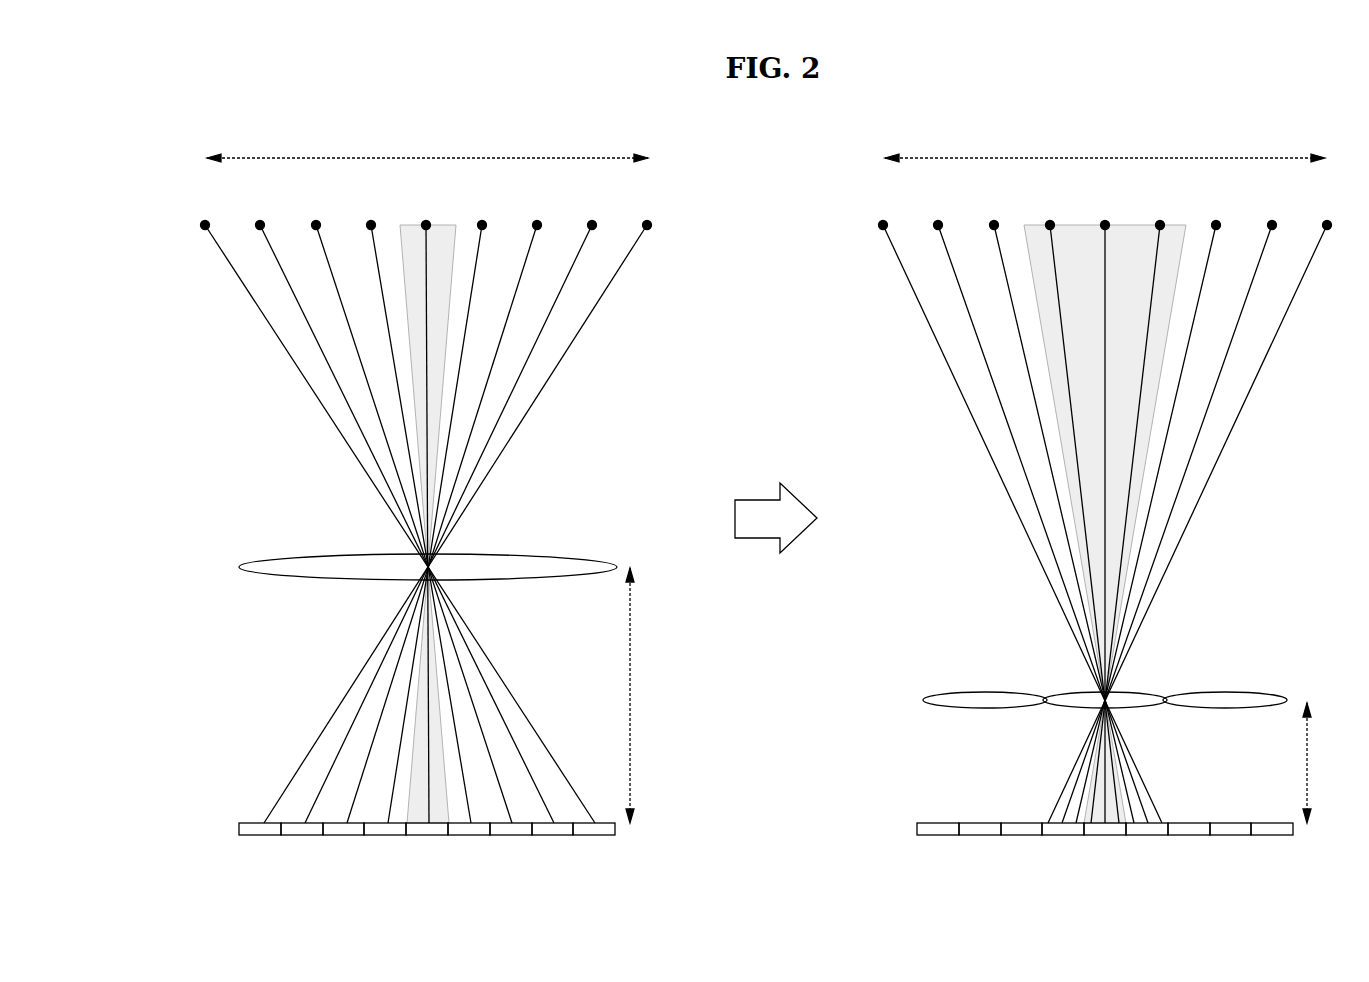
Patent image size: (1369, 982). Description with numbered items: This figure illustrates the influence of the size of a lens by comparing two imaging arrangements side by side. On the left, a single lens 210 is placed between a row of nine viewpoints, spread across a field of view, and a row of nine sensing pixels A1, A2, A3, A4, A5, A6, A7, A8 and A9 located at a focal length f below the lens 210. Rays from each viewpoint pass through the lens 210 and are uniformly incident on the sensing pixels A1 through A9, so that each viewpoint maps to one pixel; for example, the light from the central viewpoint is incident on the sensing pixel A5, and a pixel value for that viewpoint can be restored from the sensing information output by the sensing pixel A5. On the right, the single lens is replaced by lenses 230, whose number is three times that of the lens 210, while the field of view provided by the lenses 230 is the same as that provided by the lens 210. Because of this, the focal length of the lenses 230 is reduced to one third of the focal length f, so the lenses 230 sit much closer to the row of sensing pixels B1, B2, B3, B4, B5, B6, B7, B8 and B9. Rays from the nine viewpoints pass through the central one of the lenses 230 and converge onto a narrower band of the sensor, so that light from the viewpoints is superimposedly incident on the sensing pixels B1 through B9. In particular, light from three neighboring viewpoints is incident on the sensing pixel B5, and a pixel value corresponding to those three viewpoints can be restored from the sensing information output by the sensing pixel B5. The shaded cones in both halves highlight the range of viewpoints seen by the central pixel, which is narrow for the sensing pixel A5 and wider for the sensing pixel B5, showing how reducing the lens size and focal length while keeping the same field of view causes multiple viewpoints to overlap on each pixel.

The lens 210 is at (538, 553).
The lenses 230 is at (1247, 693).
The sensing pixel A1 is at (260, 846).
The sensing pixel A2 is at (302, 846).
The sensing pixel A3 is at (343, 846).
The sensing pixel A4 is at (385, 846).
The sensing pixel A5 is at (427, 846).
The sensing pixel A6 is at (469, 846).
The sensing pixel A7 is at (511, 846).
The sensing pixel A8 is at (552, 846).
The sensing pixel A9 is at (594, 846).
The sensing pixel B1 is at (938, 846).
The sensing pixel B2 is at (980, 846).
The sensing pixel B3 is at (1021, 846).
The sensing pixel B4 is at (1063, 846).
The sensing pixel B5 is at (1105, 846).
The sensing pixel B6 is at (1147, 846).
The sensing pixel B7 is at (1189, 846).
The sensing pixel B8 is at (1230, 846).
The sensing pixel B9 is at (1272, 846).
The focal length f is at (640, 695).